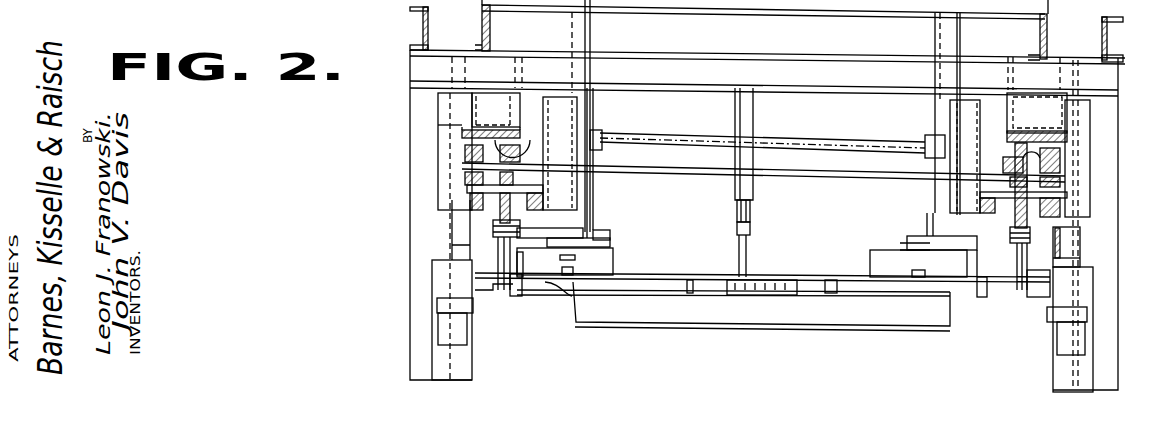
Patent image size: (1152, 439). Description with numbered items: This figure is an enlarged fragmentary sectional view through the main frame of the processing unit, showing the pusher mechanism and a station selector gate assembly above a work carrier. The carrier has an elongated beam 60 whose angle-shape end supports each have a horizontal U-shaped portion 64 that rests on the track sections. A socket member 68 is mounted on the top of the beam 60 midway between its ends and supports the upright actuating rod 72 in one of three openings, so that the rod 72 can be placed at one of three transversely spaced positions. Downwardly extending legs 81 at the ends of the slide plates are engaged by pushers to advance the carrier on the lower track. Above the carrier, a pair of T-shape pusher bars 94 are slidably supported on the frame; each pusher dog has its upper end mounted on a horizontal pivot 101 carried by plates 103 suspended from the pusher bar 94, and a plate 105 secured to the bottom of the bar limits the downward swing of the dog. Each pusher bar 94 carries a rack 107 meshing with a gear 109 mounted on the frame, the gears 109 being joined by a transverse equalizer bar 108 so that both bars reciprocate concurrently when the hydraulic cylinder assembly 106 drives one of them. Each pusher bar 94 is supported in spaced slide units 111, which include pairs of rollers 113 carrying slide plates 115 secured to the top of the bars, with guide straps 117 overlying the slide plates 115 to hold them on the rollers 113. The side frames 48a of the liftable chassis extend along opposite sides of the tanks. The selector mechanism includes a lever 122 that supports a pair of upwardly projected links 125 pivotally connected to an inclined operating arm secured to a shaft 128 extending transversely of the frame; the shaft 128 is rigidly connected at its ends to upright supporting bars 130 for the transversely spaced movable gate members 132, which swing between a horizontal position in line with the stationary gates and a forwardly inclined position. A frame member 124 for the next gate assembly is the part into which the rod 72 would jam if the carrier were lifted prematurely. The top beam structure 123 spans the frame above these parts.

The side frame 48a is at (437, 277).
The elongated beam 60 is at (685, 318).
The U-shaped portion 64 is at (557, 292).
The socket member 68 is at (755, 297).
The actuating rod 72 is at (746, 253).
The leg 81 is at (512, 297).
The pusher bar 94 is at (470, 218).
The horizontal pivot 101 is at (1028, 238).
The plate 103 is at (968, 260).
The plate 105 is at (1057, 237).
The hydraulic cylinder assembly 106 is at (527, 132).
The rack 107 is at (546, 188).
The equalizer bar 108 is at (793, 170).
The gear 109 is at (523, 162).
The slide unit 111 is at (582, 108).
The roller 113 is at (948, 208).
The slide plate 115 is at (1035, 192).
The guide strap 117 is at (988, 197).
The lever 122 is at (737, 236).
The beam 123 is at (808, 64).
The frame member 124 is at (752, 190).
The link 125 is at (737, 213).
The shaft 128 is at (667, 138).
The supporting bar 130 is at (600, 212).
The movable gate member 132 is at (608, 238).